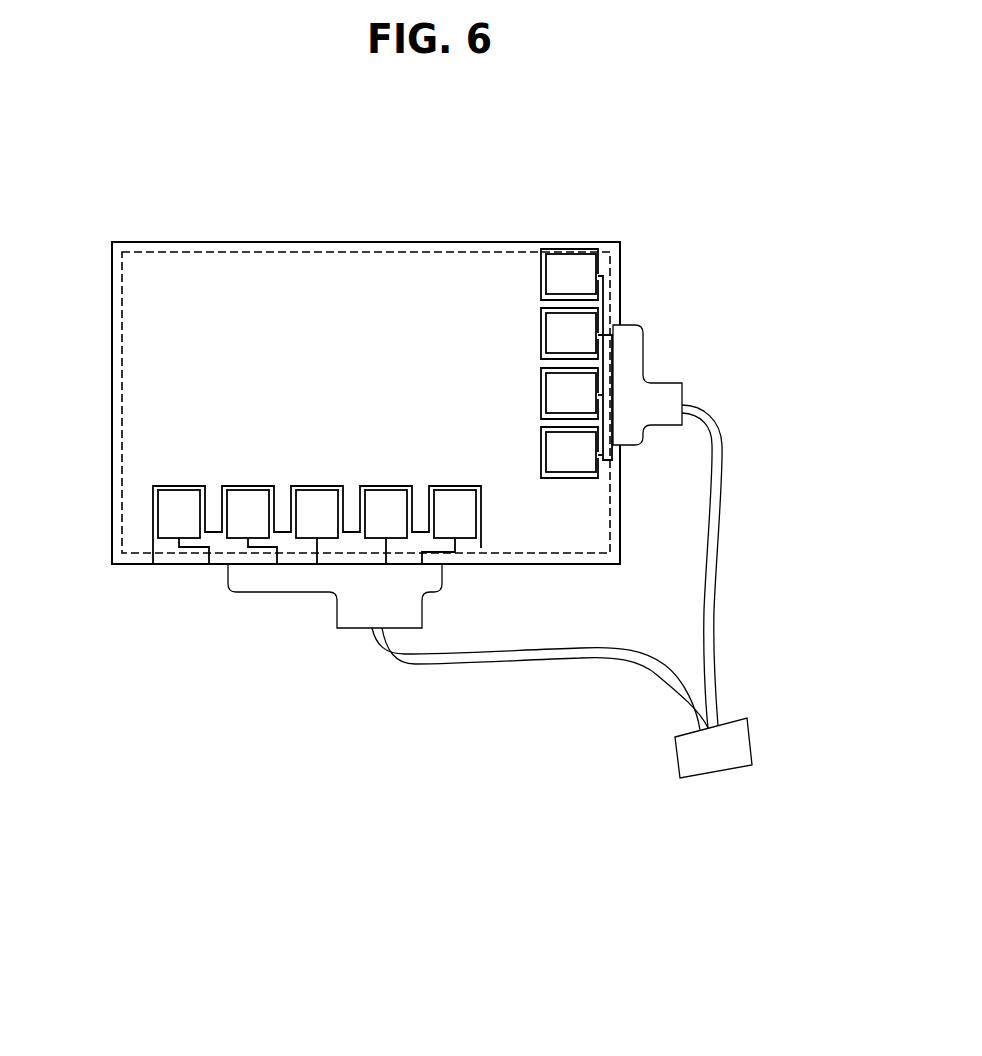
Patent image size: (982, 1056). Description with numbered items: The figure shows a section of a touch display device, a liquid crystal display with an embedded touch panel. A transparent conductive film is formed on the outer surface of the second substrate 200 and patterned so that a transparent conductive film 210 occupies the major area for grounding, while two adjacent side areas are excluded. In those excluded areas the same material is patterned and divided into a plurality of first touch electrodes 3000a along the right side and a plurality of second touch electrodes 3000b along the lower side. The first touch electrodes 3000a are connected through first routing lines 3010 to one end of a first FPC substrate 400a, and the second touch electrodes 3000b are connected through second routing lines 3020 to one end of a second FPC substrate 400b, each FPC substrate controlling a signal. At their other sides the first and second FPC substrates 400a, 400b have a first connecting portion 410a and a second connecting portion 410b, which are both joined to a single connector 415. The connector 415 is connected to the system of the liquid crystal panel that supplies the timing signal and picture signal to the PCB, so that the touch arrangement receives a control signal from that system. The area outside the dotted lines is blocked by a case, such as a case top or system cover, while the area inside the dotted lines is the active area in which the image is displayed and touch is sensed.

The second substrate 200 is at (175, 565).
The transparent conductive film 210 is at (345, 262).
The first touch electrodes 3000a is at (576, 272).
The first routing lines 3010 is at (612, 300).
The first FPC substrate 400a is at (665, 385).
The first connecting portion 410a is at (718, 524).
The connector 415 is at (718, 768).
The second touch electrodes 3000b is at (165, 516).
The second routing lines 3020 is at (209, 564).
The second FPC substrate 400b is at (285, 587).
The second connecting portion 410b is at (534, 658).